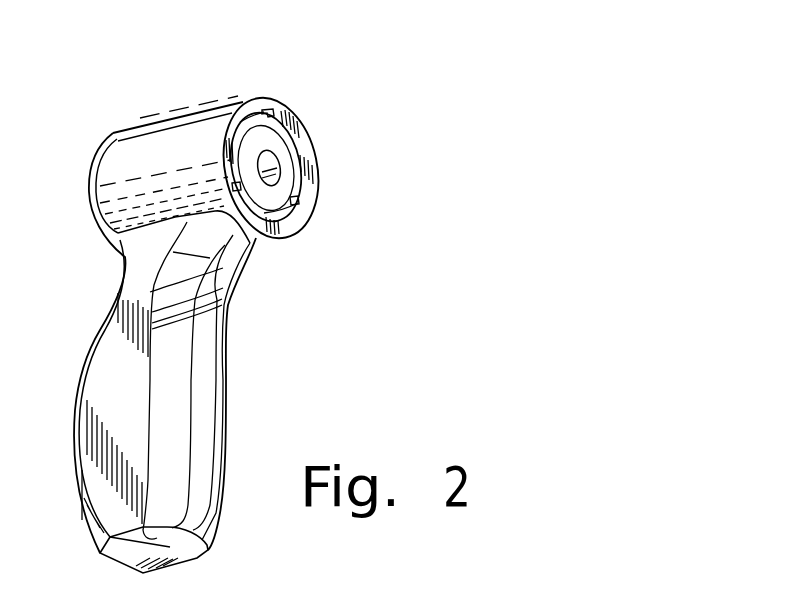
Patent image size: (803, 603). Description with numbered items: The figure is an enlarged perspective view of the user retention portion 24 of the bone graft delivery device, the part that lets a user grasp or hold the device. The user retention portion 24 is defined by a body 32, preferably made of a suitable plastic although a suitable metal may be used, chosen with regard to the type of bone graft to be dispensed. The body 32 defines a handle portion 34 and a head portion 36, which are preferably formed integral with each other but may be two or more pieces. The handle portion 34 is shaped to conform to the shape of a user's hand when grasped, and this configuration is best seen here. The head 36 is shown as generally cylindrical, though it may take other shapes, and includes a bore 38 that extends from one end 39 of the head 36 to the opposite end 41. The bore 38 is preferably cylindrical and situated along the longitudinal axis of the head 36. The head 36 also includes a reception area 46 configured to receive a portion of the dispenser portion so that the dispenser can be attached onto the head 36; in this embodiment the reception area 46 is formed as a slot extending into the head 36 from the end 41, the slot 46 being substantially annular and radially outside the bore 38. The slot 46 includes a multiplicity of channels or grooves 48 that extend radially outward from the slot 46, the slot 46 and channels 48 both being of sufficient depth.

The user retention portion 24 is at (423, 91).
The body 32 is at (89, 338).
The handle portion 34 is at (97, 470).
The head portion 36 is at (195, 121).
The bore 38 is at (273, 165).
The end of the head 39 is at (88, 176).
The end of the head 41 is at (300, 135).
The reception area 46 is at (302, 183).
The channels 48 is at (268, 110).